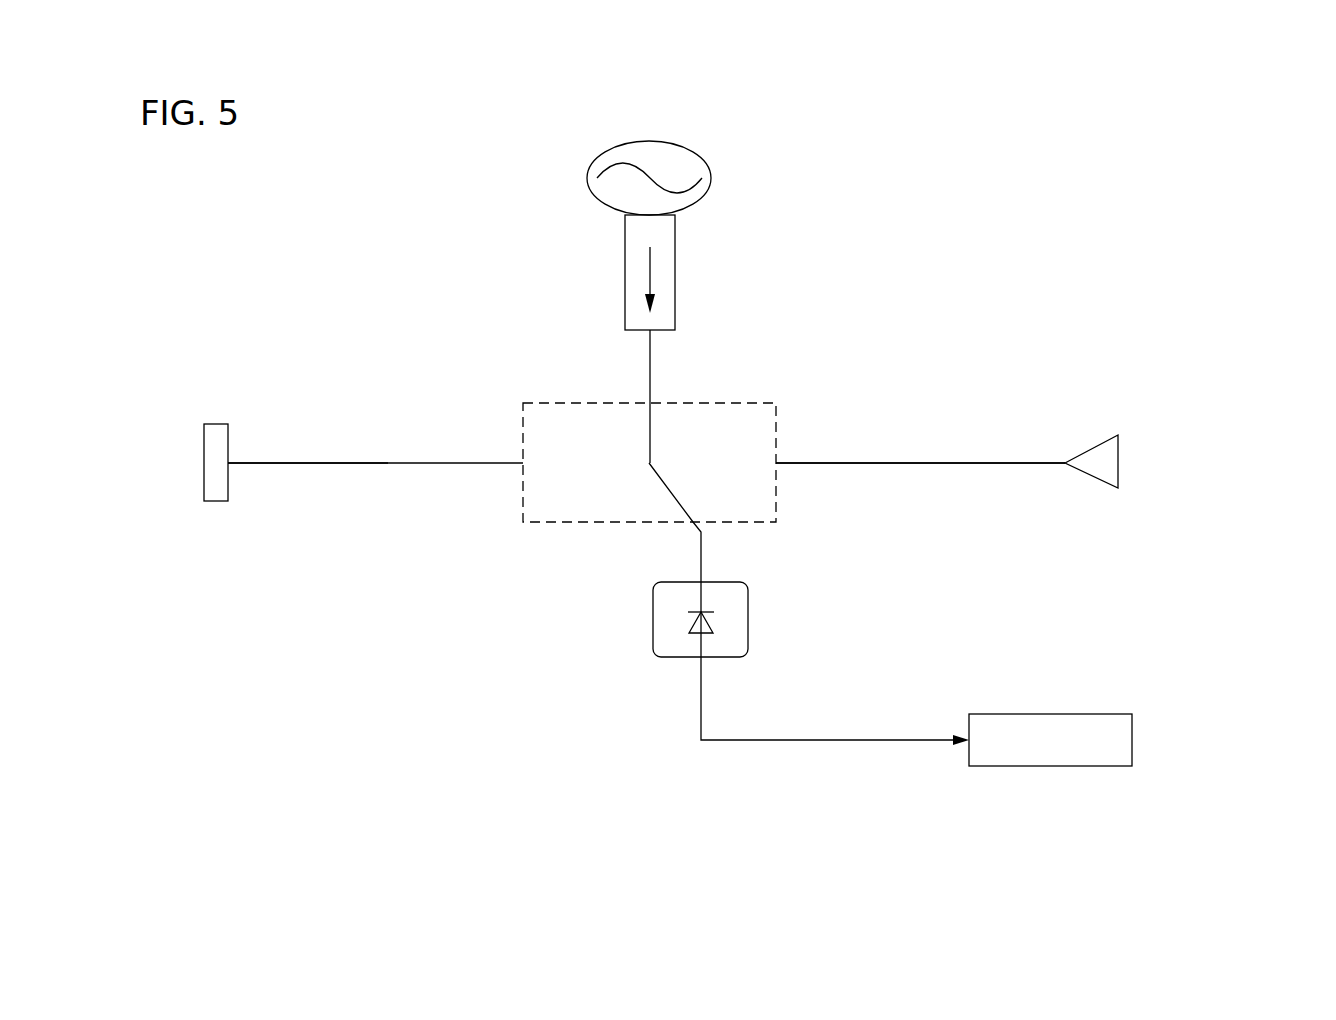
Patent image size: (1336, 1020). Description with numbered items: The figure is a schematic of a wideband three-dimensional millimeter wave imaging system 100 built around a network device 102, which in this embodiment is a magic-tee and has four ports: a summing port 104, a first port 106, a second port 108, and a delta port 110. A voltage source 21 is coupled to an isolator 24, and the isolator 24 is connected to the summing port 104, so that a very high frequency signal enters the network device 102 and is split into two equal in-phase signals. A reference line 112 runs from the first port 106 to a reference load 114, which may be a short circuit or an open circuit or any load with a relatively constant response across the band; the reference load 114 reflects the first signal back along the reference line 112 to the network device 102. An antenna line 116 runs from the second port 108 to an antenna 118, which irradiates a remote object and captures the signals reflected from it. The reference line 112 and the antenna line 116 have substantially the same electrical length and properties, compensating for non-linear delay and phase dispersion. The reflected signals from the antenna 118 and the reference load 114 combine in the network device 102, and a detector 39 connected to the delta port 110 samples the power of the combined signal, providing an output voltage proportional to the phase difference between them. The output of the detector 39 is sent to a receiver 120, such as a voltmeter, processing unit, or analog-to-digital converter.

The wideband 3D imaging system 100 is at (797, 142).
The voltage source 21 is at (648, 140).
The isolator 24 is at (675, 258).
The network device 102 is at (570, 403).
The summing port 104 is at (650, 403).
The first port 106 is at (514, 467).
The second port 108 is at (778, 463).
The delta port 110 is at (684, 527).
The reference line 112 is at (388, 463).
The reference load 114 is at (222, 501).
The antenna line 116 is at (962, 463).
The antenna 118 is at (1118, 478).
The detector 39 is at (759, 622).
The receiver 120 is at (1057, 708).